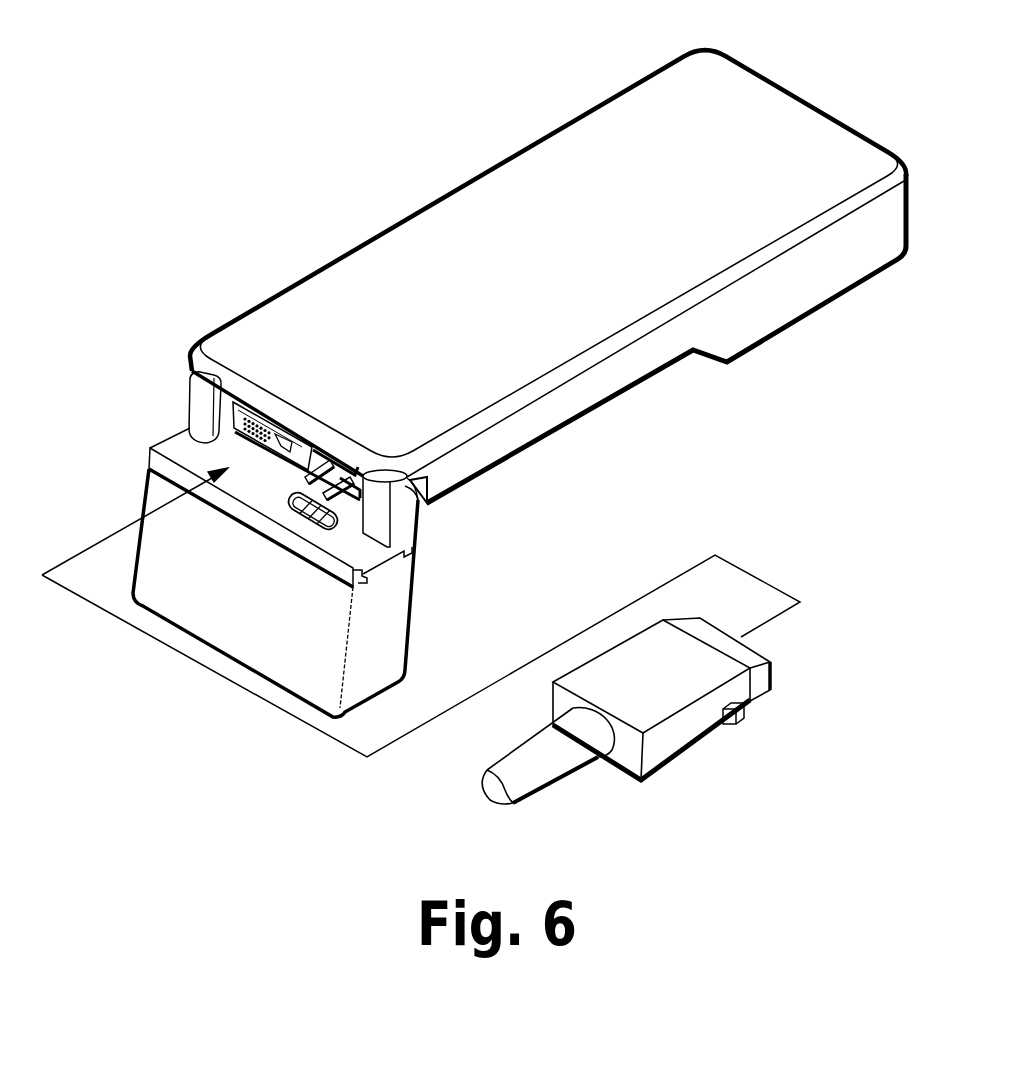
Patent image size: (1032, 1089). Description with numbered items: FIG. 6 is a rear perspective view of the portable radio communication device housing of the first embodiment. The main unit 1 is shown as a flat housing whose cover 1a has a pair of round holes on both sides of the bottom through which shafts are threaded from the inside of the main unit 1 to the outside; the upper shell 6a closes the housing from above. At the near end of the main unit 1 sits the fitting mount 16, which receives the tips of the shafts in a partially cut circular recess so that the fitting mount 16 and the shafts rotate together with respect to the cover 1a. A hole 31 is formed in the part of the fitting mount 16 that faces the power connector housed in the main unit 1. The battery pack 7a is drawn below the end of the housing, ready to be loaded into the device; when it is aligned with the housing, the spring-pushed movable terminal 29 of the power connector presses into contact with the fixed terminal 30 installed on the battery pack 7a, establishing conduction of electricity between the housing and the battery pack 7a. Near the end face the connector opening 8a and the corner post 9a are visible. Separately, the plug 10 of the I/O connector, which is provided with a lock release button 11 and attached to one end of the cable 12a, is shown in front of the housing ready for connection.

The main unit 1 is at (472, 172).
The cover 1a is at (815, 310).
The upper case 6a is at (620, 90).
The battery pack 7a is at (418, 613).
The connector recess 8a is at (240, 422).
The corner post 9a is at (187, 418).
The plug 10 is at (723, 737).
The lock release button 11 is at (745, 713).
The cable 12a is at (532, 793).
The fitting mount 16 is at (421, 525).
The movable terminal 29 is at (428, 499).
The fixed terminal 30 is at (291, 515).
The hole 31 is at (318, 530).